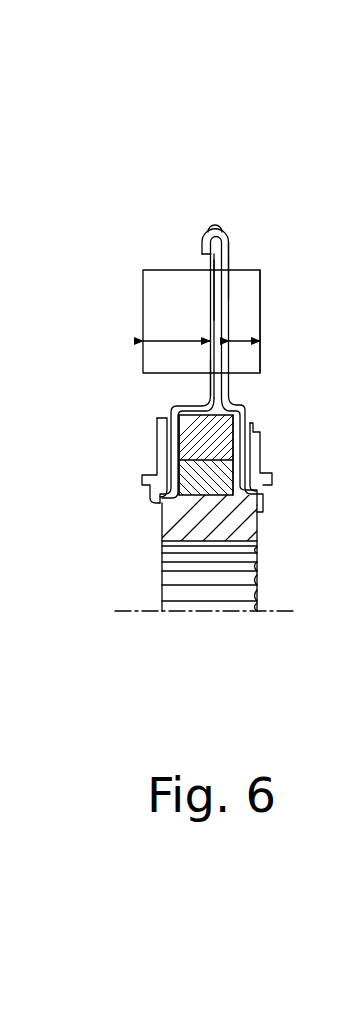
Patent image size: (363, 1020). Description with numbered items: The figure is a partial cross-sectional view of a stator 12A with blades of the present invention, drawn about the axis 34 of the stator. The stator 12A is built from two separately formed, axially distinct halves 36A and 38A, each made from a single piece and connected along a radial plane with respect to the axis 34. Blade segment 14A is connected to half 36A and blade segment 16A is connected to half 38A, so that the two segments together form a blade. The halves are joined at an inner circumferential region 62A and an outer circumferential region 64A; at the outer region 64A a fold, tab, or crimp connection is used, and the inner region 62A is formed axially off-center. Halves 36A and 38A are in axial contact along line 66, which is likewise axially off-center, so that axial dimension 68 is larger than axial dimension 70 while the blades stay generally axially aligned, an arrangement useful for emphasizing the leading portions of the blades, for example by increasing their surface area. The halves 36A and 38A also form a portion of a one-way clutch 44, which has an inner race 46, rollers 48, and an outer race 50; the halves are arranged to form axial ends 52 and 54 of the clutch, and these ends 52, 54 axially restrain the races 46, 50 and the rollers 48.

The stator 12A is at (137, 148).
The blade segment 14A is at (163, 307).
The blade segment 16A is at (250, 288).
The stator half 36A is at (210, 263).
The outer circumferential region 64A is at (221, 224).
The stator half 38A is at (230, 250).
The contact line 66 is at (217, 290).
The axial dimension 68 is at (173, 340).
The axial dimension 70 is at (237, 338).
The inner circumferential region 62A is at (204, 393).
The one-way clutch 44 is at (153, 458).
The outer race 50 is at (222, 428).
The axial end 52 is at (178, 445).
The axial end 54 is at (238, 450).
The rollers 48 is at (218, 480).
The inner race 46 is at (227, 518).
The axis 34 is at (142, 608).